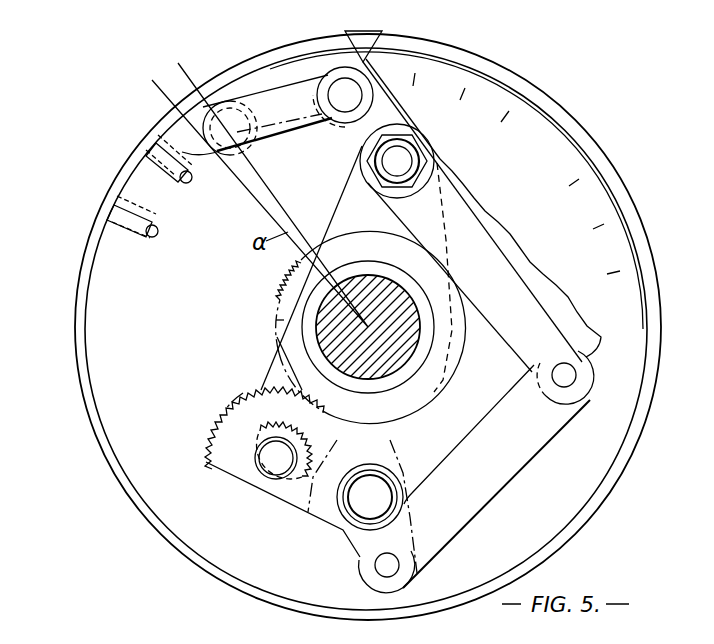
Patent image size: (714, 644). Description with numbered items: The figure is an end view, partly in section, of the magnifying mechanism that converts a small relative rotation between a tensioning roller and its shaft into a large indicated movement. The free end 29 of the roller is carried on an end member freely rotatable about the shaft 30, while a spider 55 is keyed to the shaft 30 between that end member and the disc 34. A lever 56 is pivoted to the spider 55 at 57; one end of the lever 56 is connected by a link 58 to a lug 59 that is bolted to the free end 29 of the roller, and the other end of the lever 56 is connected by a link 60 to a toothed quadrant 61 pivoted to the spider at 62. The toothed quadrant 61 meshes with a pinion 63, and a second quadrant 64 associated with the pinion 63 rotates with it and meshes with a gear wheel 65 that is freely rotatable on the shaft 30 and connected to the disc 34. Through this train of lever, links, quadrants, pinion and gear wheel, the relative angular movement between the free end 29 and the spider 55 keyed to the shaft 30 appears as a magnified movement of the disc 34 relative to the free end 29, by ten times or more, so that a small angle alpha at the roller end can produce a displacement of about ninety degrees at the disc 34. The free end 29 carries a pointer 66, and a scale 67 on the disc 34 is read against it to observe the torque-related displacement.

The free end of the roller 29 is at (88, 281).
The shaft 30 is at (342, 341).
The disc 34 is at (636, 297).
The spider 55 is at (338, 214).
The lever 56 is at (534, 345).
The pivot of lever on spider 57 is at (397, 161).
The link 58 is at (286, 107).
The lug 59 is at (150, 182).
The link 60 is at (505, 462).
The toothed quadrant 61 is at (322, 492).
The pivot of toothed quadrant on spider 62 is at (366, 503).
The pinion 63 is at (271, 482).
The quadrant 64 is at (246, 458).
The gear wheel 65 is at (292, 326).
The pointer 66 is at (364, 41).
The scale 67 is at (546, 158).